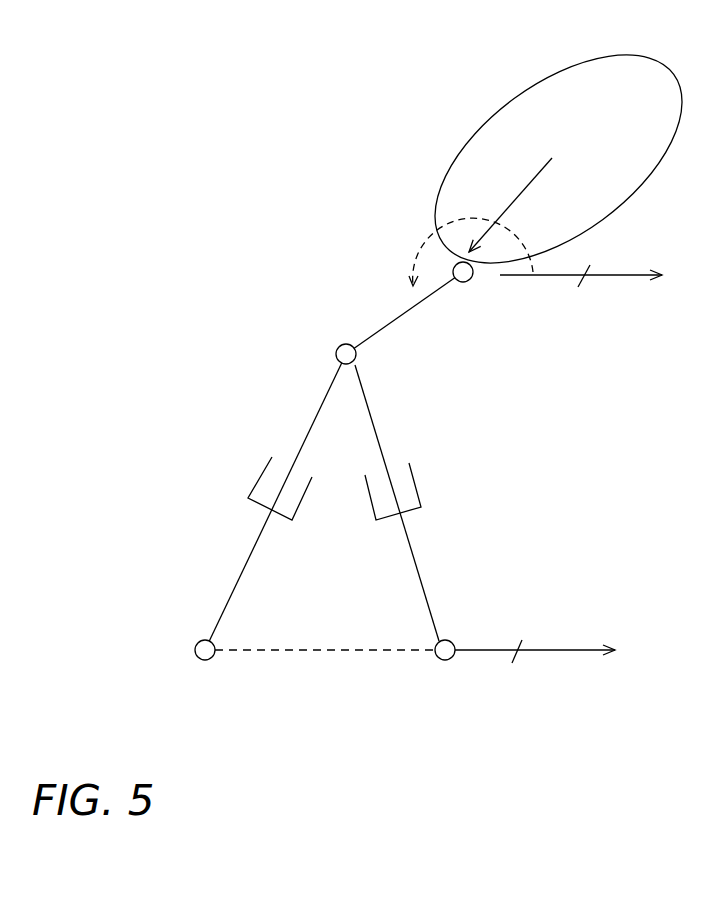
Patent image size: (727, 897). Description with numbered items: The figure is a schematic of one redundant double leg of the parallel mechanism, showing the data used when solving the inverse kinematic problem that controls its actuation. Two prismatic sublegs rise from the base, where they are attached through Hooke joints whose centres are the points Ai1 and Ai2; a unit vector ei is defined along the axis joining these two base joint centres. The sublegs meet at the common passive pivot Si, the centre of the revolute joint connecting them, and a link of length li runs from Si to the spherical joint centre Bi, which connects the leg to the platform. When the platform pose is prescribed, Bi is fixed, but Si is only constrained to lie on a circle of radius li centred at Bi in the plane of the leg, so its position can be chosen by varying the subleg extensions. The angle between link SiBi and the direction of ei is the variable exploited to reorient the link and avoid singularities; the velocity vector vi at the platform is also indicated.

The common passive pivot point Si is at (328, 341).
The spherical joint centre Bi is at (467, 287).
The base Hooke joint centre of first subleg Ai1 is at (194, 665).
The base Hooke joint centre of second subleg Ai2 is at (438, 665).
The link length li is at (404, 313).
The unit vector ei is at (548, 646).
The velocity vector v_i of the platform at B_i vi is at (510, 199).